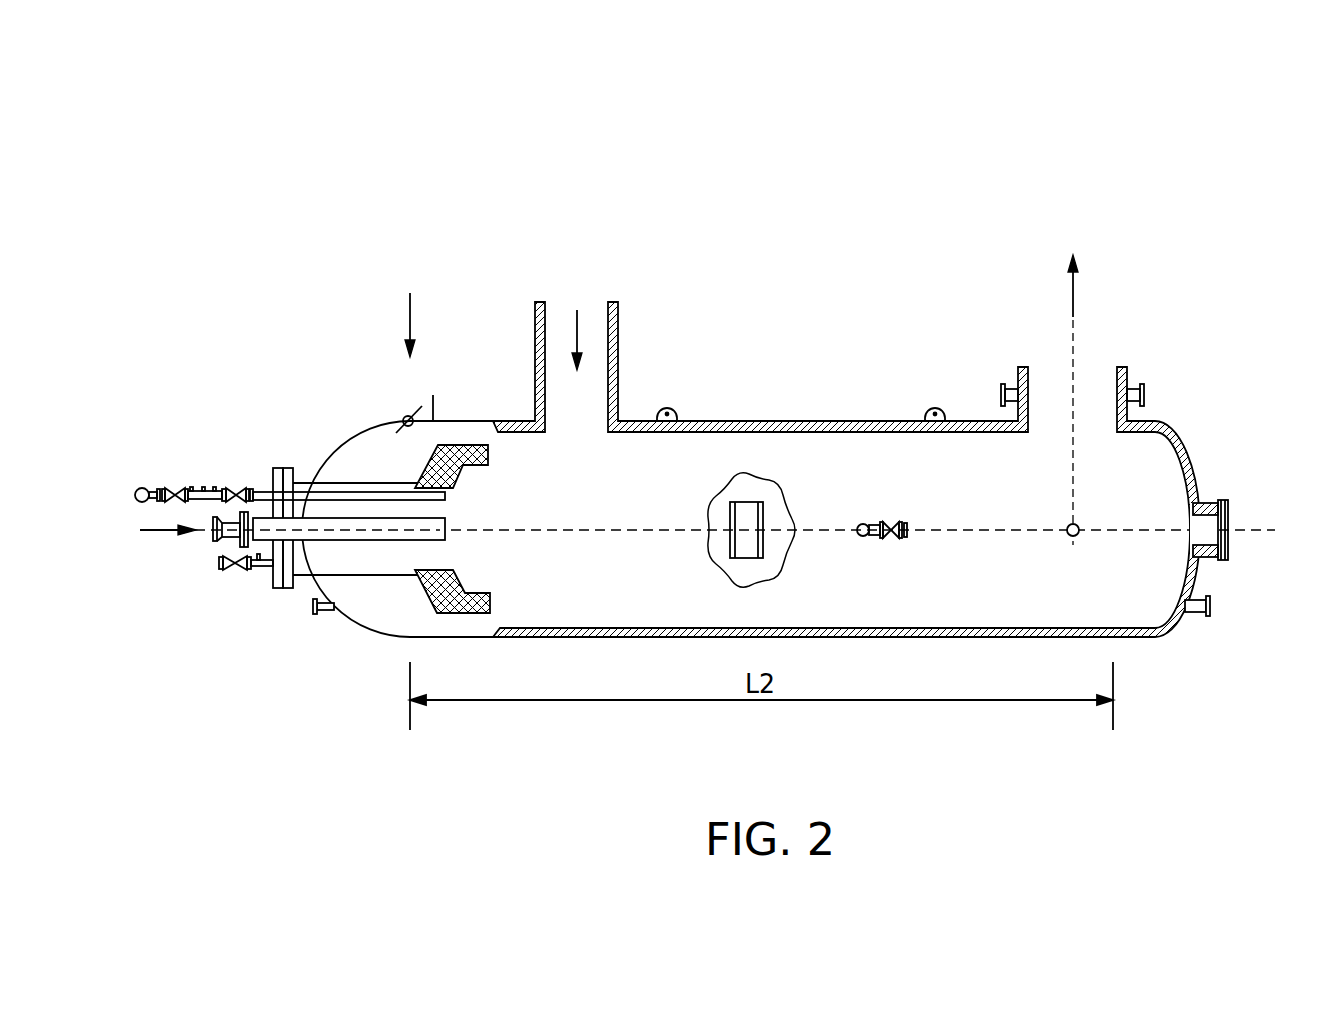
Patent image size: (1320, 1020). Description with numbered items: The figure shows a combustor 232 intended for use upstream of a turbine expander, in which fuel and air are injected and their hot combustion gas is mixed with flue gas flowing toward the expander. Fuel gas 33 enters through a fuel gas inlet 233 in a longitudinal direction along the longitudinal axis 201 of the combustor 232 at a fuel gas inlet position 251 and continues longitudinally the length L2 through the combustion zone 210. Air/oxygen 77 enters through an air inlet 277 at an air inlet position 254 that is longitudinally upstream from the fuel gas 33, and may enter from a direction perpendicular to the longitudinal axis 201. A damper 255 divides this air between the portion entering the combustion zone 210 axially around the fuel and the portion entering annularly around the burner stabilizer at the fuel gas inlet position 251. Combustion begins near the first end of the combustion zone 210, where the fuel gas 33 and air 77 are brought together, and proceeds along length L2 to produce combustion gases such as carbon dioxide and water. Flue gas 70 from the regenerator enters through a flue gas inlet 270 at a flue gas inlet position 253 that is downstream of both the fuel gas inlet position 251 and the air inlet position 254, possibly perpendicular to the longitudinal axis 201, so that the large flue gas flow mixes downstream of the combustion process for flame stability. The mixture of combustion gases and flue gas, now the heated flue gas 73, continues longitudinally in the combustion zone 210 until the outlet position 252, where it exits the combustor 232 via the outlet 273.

The combustor 232 is at (708, 389).
The damper 255 is at (423, 407).
The air inlet position 254 is at (386, 417).
The air/oxygen 77 is at (410, 312).
The air inlet 277 is at (433, 397).
The flue gas 70 is at (577, 312).
The flue gas inlet 270 is at (620, 360).
The heated flue gas 73 is at (1073, 284).
The outlet 273 is at (1128, 376).
The longitudinal axis 201 is at (1257, 524).
The outlet position 252 is at (1088, 556).
The flue gas inlet position 253 is at (578, 446).
The fuel gas inlet position 251 is at (462, 541).
The fuel gas 33 is at (165, 531).
The fuel gas inlet 233 is at (222, 540).
The combustion zone 210 is at (870, 490).